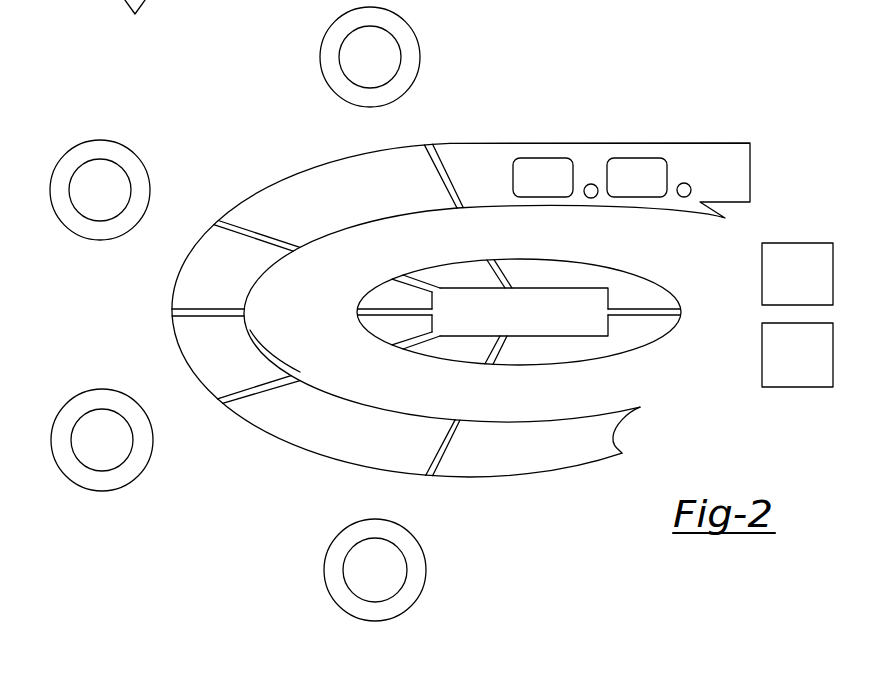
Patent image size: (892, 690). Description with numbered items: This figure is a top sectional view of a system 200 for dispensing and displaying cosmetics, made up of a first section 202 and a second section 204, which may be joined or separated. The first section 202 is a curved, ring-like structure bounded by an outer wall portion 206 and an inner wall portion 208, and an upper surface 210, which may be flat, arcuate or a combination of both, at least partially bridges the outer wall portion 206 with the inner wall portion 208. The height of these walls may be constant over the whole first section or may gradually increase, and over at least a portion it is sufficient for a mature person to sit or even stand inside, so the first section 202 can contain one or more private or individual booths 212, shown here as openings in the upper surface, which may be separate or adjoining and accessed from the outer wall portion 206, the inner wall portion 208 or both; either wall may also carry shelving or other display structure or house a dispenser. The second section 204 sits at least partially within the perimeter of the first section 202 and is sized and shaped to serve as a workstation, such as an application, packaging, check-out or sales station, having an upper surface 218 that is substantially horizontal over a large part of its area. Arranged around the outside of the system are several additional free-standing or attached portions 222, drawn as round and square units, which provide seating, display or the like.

The system 200 is at (639, 89).
The first section 202 is at (475, 158).
The second section 204 is at (650, 287).
The outer wall portion 206 is at (315, 432).
The inner wall portion 208 is at (323, 407).
The upper surface 210 is at (524, 460).
The booths 212 is at (647, 167).
The upper surface 218 is at (538, 320).
The free-standing or attached portions 222 is at (325, 82).